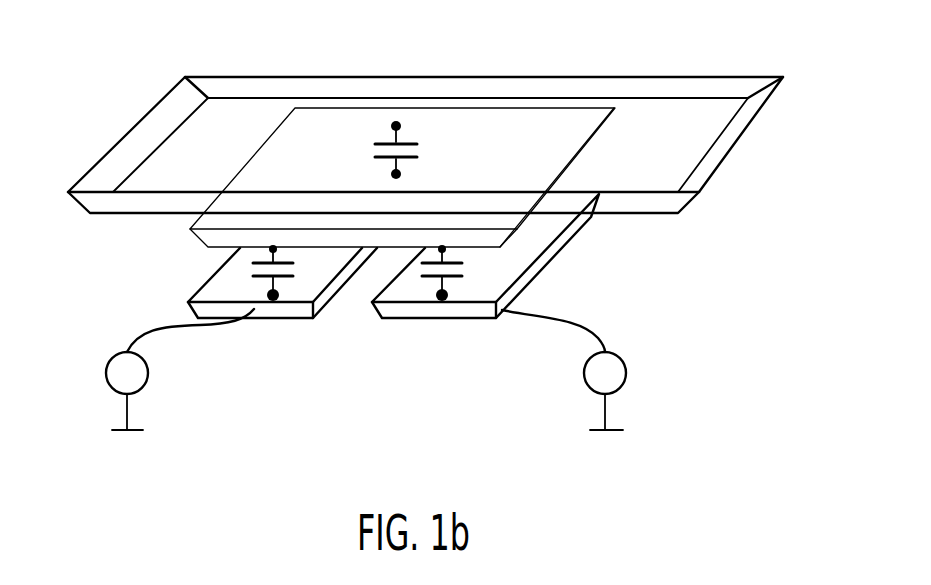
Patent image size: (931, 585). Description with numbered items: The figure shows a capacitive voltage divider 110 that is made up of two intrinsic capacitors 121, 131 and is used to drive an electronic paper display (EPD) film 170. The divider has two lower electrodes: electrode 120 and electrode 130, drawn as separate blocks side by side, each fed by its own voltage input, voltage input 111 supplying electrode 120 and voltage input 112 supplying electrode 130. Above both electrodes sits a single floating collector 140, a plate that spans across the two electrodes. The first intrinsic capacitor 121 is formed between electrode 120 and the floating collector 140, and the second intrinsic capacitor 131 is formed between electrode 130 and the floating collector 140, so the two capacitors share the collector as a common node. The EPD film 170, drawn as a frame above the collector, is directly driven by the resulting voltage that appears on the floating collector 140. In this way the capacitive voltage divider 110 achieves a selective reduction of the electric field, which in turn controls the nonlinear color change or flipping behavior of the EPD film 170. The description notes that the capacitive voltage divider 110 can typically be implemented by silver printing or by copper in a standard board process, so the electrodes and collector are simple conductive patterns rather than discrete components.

The capacitive voltage divider 110 is at (767, 40).
The electronic paper display film 170 is at (142, 120).
The floating collector 140 is at (530, 127).
The electrode 120 is at (194, 295).
The intrinsic capacitor 121 is at (201, 257).
The electrode 130 is at (543, 273).
The intrinsic capacitor 131 is at (587, 240).
The voltage input 111 is at (148, 381).
The voltage input 112 is at (584, 373).